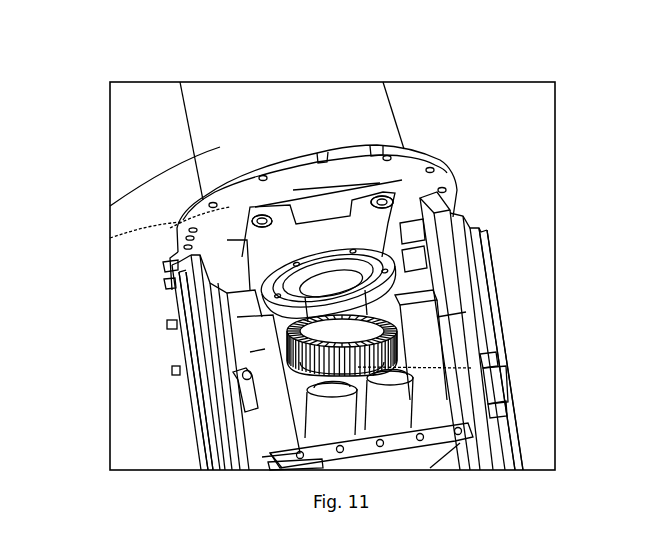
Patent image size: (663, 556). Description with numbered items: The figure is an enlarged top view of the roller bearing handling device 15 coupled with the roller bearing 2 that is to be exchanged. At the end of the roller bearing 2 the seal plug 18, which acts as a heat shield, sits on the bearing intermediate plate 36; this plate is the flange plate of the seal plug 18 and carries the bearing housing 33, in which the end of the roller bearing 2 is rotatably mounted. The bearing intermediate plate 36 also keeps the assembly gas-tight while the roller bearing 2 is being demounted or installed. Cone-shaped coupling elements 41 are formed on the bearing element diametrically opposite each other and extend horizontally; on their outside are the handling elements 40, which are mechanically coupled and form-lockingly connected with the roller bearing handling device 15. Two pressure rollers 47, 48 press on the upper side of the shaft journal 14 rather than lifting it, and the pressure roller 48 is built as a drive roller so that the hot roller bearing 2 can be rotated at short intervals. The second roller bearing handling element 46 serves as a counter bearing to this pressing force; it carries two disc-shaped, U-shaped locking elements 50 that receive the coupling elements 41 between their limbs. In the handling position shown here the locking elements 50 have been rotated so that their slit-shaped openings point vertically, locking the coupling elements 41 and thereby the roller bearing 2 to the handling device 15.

The roller bearing 2 is at (177, 110).
The shaft journal 14 is at (472, 368).
The roller bearing handling device 15 is at (507, 319).
The seal plug 18 is at (163, 169).
The bearing housing 33 is at (350, 246).
The bearing intermediate plate 36 is at (433, 180).
The handling element 40 is at (263, 252).
The coupling element 41 is at (322, 211).
The second roller bearing handling element 46 is at (250, 266).
The pressure roller 47 is at (323, 427).
The pressure roller 48 is at (402, 415).
The locking element 50 is at (347, 349).